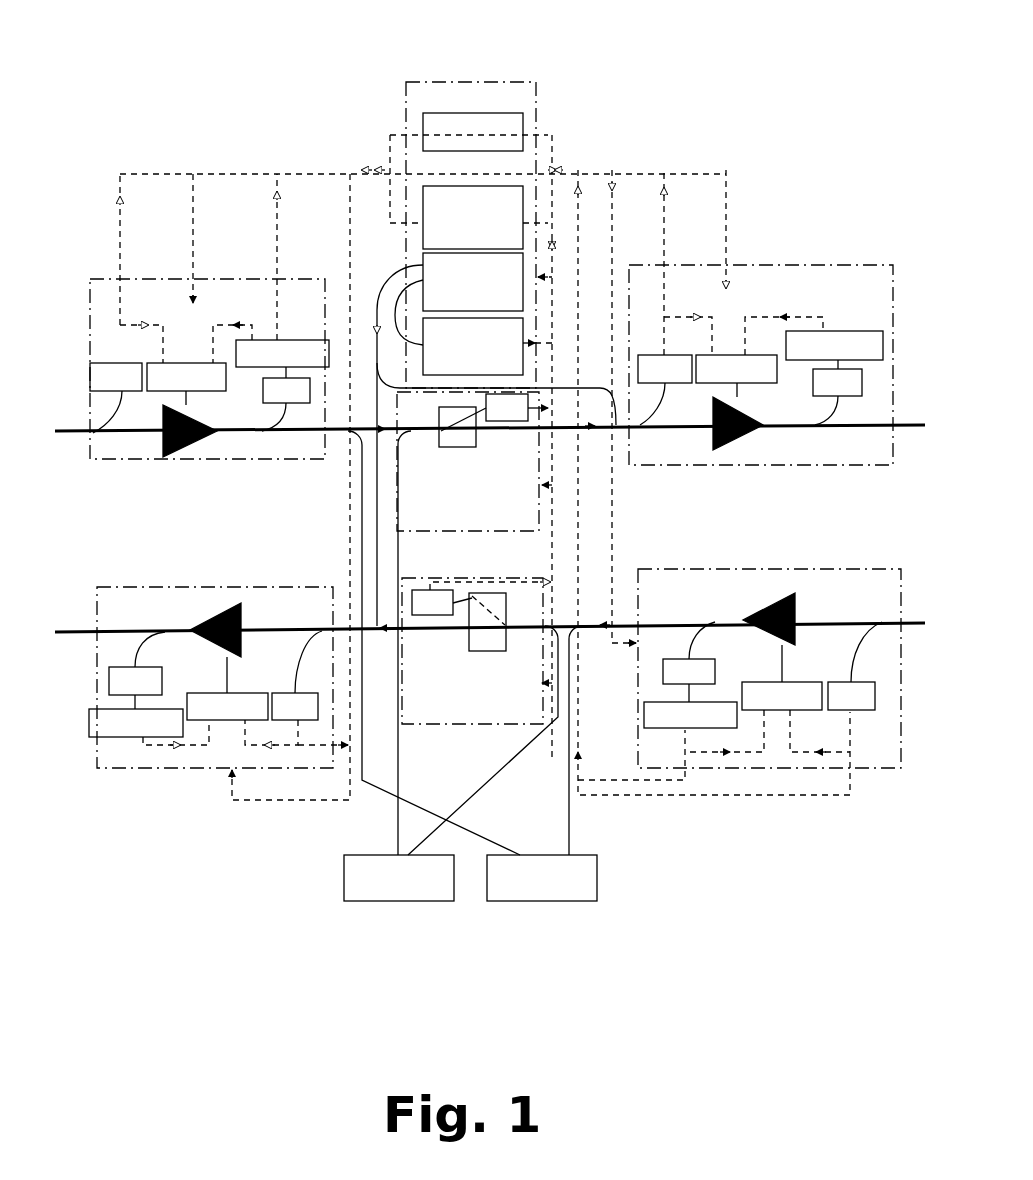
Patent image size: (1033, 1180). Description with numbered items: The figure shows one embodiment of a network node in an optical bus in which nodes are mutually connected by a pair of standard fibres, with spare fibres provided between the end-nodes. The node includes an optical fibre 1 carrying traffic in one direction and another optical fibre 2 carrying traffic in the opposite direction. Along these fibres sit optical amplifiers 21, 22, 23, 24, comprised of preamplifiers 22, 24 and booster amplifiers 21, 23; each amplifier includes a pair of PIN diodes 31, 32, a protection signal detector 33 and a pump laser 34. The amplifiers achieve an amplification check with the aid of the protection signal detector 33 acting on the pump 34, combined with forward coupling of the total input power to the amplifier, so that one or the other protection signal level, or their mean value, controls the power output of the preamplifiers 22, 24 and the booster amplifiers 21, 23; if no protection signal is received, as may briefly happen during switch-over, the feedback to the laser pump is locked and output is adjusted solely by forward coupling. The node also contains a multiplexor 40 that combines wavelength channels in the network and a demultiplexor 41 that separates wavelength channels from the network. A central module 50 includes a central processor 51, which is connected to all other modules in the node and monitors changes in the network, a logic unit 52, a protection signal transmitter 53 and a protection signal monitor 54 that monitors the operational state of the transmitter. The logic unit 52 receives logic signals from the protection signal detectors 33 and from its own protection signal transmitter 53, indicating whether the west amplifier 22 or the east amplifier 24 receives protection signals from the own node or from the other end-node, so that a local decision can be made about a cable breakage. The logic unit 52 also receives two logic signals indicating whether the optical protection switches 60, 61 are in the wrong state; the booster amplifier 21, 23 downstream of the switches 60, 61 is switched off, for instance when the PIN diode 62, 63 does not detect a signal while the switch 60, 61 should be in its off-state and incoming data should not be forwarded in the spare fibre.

The optical fibre 1 is at (107, 434).
The optical fibre 2 is at (122, 630).
The booster amplifier 21 is at (137, 795).
The preamplifier 22 is at (195, 483).
The booster amplifier 23 is at (727, 485).
The preamplifier 24 is at (785, 711).
The PIN diode 31 is at (670, 659).
The PIN diode 32 is at (870, 696).
The protection signal detector 33 is at (712, 728).
The pump laser 34 is at (790, 682).
The multiplexor 40 is at (388, 918).
The demultiplexor 41 is at (553, 918).
The central module 50 is at (581, 322).
The central processor 51 is at (490, 122).
The logic unit 52 is at (513, 192).
The protection signal transmitter 53 is at (513, 262).
The protection signal monitor 54 is at (513, 332).
The optical protection switch 60 is at (542, 502).
The optical protection switch 61 is at (483, 740).
The PIN diode 62 is at (540, 430).
The PIN diode 63 is at (420, 590).